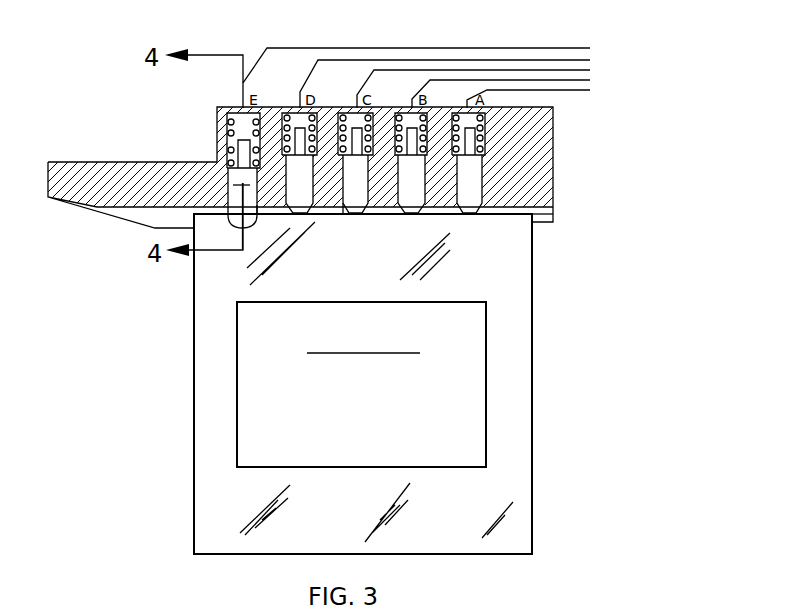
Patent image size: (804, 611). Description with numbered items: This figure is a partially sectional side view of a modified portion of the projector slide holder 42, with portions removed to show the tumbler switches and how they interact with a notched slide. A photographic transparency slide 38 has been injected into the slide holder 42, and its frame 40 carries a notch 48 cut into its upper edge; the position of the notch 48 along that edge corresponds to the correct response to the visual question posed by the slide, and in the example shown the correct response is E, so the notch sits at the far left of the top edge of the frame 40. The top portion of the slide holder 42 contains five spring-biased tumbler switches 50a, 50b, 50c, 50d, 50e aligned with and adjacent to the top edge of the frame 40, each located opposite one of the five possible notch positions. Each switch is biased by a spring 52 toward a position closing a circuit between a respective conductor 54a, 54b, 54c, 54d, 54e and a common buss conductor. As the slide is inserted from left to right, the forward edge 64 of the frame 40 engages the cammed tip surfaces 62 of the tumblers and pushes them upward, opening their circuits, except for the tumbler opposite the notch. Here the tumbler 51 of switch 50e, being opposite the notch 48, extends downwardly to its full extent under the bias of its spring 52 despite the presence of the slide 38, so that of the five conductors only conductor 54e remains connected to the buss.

The photographic transparency slide 38 is at (532, 390).
The frame 40 is at (329, 521).
The slide holder 42 is at (548, 172).
The notch 48 is at (255, 220).
The tumbler switch 50a is at (482, 213).
The tumbler switch 50b is at (421, 213).
The tumbler switch 50c is at (363, 214).
The tumbler switch 50d is at (288, 214).
The tumbler switch 50e is at (229, 210).
The tumbler 51 is at (241, 178).
The spring 52 is at (227, 134).
The conductor 54a is at (590, 90).
The conductor 54b is at (590, 80).
The conductor 54c is at (590, 70).
The conductor 54d is at (590, 60).
The conductor 54e is at (590, 48).
The cammed tip surface 62 is at (345, 213).
The forward edge 64 is at (532, 307).